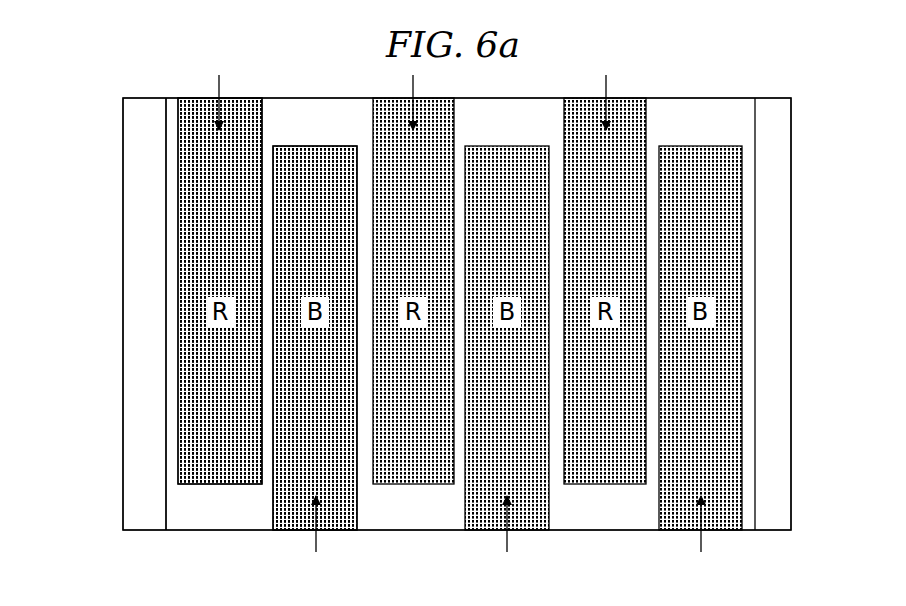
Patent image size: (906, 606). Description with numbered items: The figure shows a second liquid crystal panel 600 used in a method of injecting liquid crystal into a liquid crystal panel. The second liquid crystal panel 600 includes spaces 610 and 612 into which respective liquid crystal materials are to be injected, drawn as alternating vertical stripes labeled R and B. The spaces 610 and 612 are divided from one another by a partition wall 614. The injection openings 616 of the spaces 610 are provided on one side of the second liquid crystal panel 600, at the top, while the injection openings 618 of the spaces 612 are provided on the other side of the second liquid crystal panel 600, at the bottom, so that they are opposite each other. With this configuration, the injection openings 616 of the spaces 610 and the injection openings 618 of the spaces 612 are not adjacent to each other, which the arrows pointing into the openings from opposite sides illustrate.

The second liquid crystal panel 600 is at (104, 232).
The spaces 610 is at (213, 278).
The spaces 612 is at (317, 358).
The partition wall 614 is at (313, 113).
The injection openings 616 is at (193, 112).
The injection openings 618 is at (288, 515).